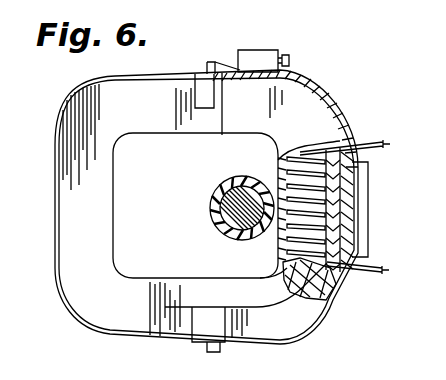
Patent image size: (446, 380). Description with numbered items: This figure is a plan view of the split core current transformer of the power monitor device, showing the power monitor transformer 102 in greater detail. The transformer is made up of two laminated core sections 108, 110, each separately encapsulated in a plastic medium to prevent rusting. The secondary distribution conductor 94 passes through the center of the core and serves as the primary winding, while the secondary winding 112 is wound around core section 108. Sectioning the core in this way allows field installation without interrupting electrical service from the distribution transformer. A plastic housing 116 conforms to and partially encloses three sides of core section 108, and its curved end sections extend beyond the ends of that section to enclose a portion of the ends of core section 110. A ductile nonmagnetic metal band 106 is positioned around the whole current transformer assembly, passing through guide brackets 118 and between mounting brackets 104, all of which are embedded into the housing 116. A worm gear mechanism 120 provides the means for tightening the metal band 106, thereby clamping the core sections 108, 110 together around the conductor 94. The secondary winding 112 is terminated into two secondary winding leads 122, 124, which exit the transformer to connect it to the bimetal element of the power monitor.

The secondary distribution conductor 94 is at (222, 235).
The power monitor transformer 102 is at (72, 326).
The mounting brackets 104 is at (369, 184).
The ductile nonmagnetic metal band 106 is at (333, 102).
The laminated core section 108 is at (264, 129).
The laminated core section 110 is at (108, 289).
The secondary winding 112 is at (283, 263).
The plastic housing 116 is at (194, 73).
The guide brackets 118 is at (211, 62).
The worm gear mechanism 120 is at (247, 51).
The secondary winding lead 122 is at (380, 272).
The secondary winding lead 124 is at (380, 142).